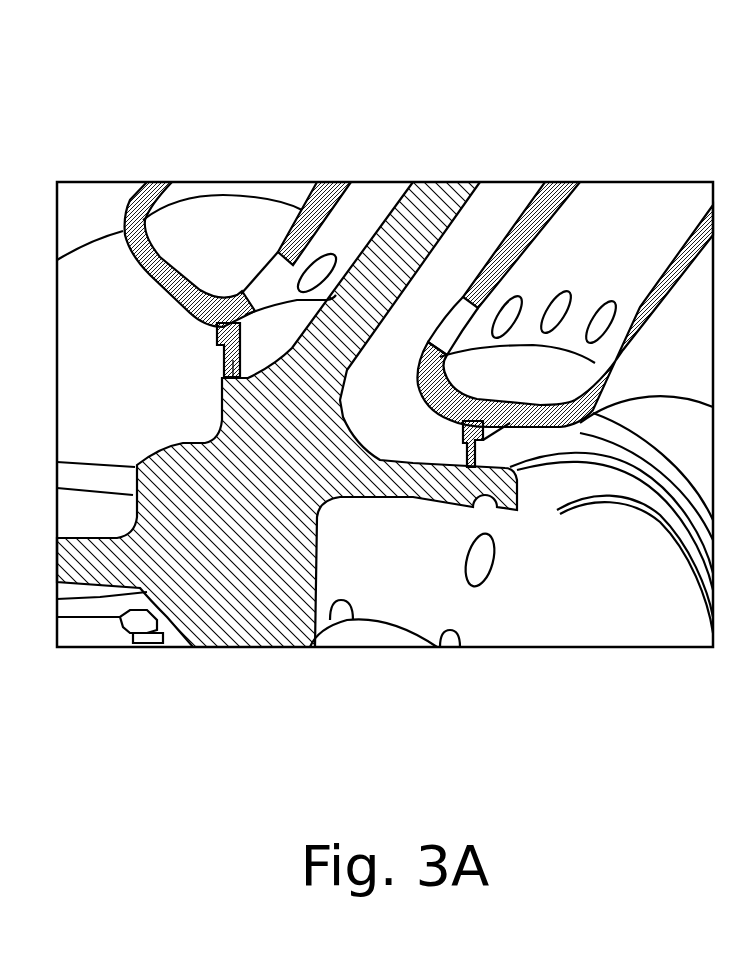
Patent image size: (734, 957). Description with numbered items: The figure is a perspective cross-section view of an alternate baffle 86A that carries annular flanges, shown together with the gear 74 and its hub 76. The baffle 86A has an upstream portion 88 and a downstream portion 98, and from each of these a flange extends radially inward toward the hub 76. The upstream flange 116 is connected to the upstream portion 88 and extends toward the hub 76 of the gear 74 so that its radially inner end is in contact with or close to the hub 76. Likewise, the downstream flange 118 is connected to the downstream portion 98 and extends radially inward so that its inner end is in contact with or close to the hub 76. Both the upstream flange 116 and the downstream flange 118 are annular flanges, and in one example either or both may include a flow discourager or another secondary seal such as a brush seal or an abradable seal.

The gear 74 is at (226, 615).
The hub 76 is at (248, 380).
The baffle 86A is at (625, 165).
The upstream portion 88 is at (153, 182).
The downstream portion 98 is at (559, 182).
The upstream flange 116 is at (260, 343).
The downstream flange 118 is at (463, 422).